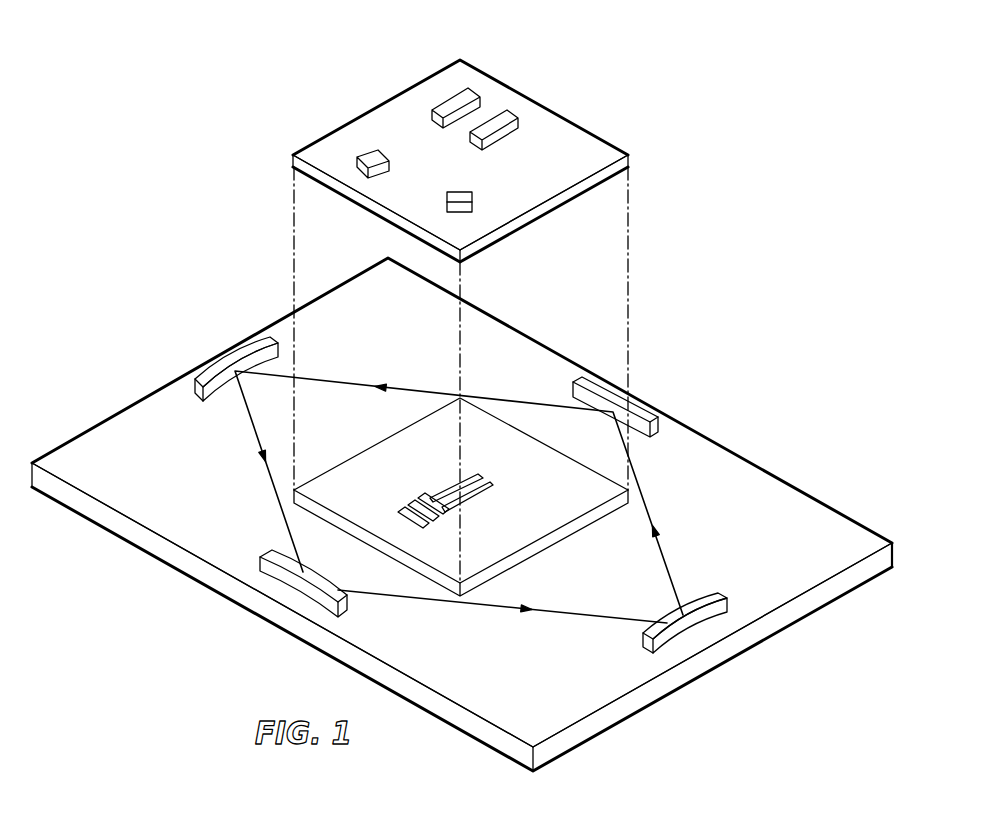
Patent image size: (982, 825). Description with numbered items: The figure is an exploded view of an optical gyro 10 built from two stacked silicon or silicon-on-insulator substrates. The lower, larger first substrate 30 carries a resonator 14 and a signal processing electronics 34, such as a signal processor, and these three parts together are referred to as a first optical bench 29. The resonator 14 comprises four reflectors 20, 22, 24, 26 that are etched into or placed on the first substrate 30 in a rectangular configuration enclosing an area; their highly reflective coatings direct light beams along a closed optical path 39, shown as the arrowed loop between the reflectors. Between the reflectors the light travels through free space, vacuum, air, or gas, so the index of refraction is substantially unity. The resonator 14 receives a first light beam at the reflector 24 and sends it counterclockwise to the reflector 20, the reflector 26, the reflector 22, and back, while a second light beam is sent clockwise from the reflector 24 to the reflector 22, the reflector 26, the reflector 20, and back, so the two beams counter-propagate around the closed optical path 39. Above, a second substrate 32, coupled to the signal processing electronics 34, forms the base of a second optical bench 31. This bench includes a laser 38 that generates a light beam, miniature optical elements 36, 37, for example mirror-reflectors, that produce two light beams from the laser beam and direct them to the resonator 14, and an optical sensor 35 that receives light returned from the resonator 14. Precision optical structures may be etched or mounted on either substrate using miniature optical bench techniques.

The optical gyro 10 is at (726, 765).
The resonator 14 is at (160, 351).
The reflector 20 is at (698, 628).
The reflector 22 is at (210, 368).
The reflector 24 is at (275, 573).
The reflector 26 is at (642, 412).
The first optical bench 29 is at (235, 633).
The first substrate 30 is at (772, 555).
The second optical bench 31 is at (572, 66).
The second substrate 32 is at (556, 173).
The signal processing electronics 34 is at (557, 510).
The optical sensor 35 is at (503, 117).
The miniature optical element 36 is at (372, 155).
The miniature optical element 37 is at (460, 200).
The laser 38 is at (445, 105).
The closed optical path 39 is at (650, 496).